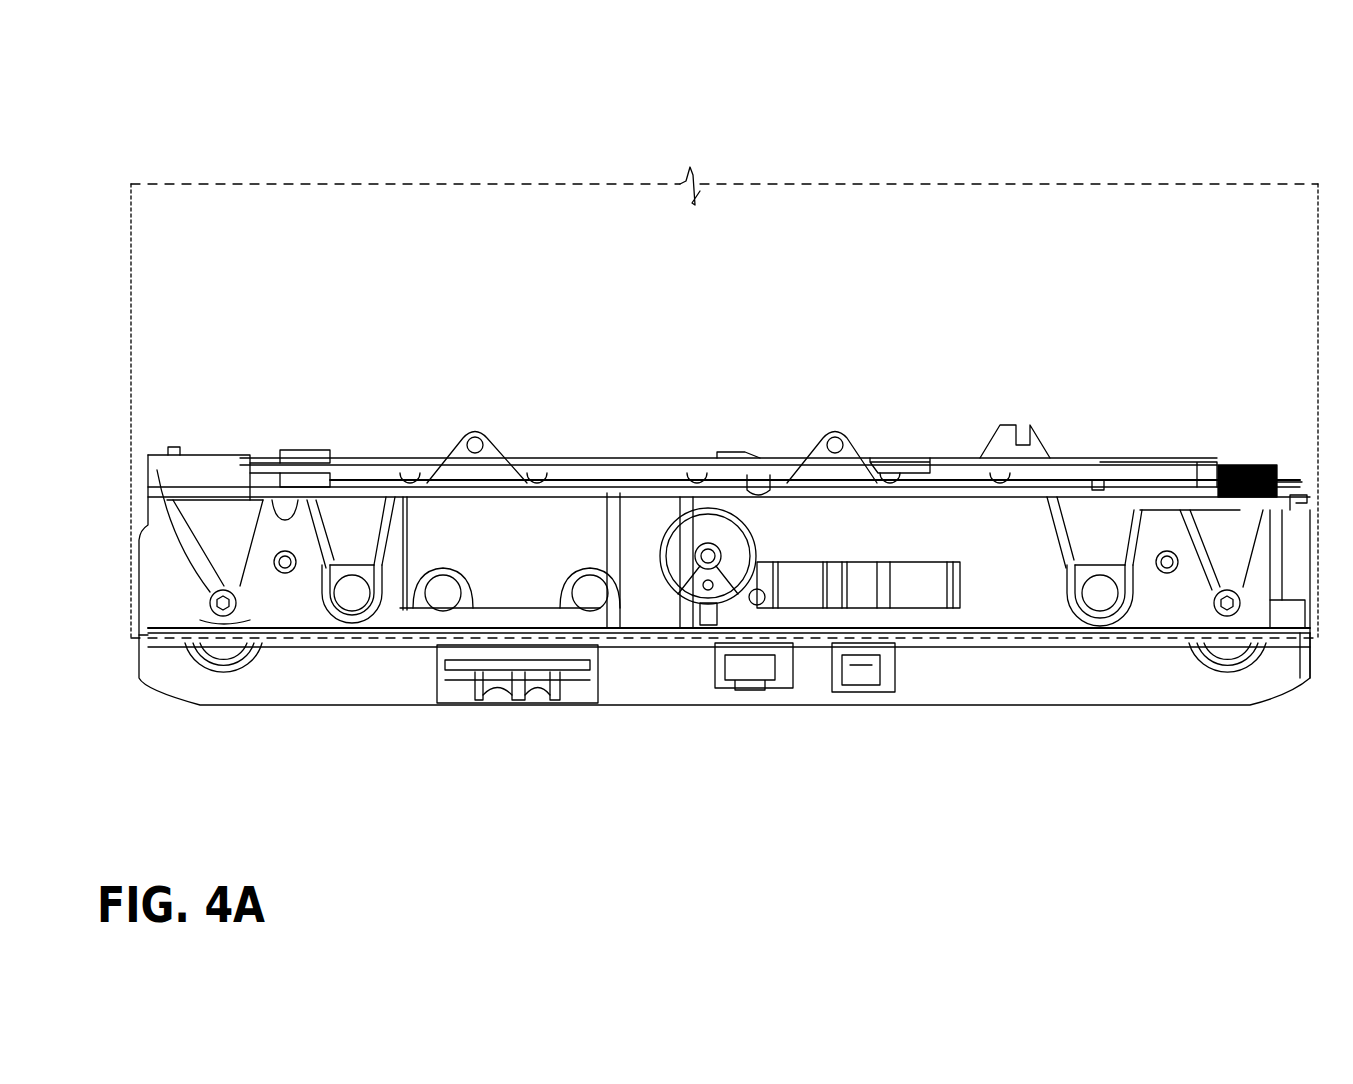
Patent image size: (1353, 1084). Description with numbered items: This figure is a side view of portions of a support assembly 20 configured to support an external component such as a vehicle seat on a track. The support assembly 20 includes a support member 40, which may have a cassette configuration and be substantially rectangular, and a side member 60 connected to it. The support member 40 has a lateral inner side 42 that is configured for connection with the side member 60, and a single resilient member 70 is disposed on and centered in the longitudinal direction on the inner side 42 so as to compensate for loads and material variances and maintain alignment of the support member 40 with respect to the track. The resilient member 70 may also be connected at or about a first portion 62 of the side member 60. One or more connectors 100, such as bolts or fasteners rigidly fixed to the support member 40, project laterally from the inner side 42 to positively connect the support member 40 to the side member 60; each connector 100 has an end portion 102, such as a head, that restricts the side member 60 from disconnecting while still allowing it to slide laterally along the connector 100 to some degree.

The support assembly 20 is at (914, 146).
The support member 40 is at (917, 447).
The inner side 42 is at (862, 520).
The side member 60 is at (315, 183).
The first portion 62 is at (131, 293).
The resilient member 70 is at (688, 547).
The connector 100 is at (362, 553).
The end portion 102 is at (352, 593).